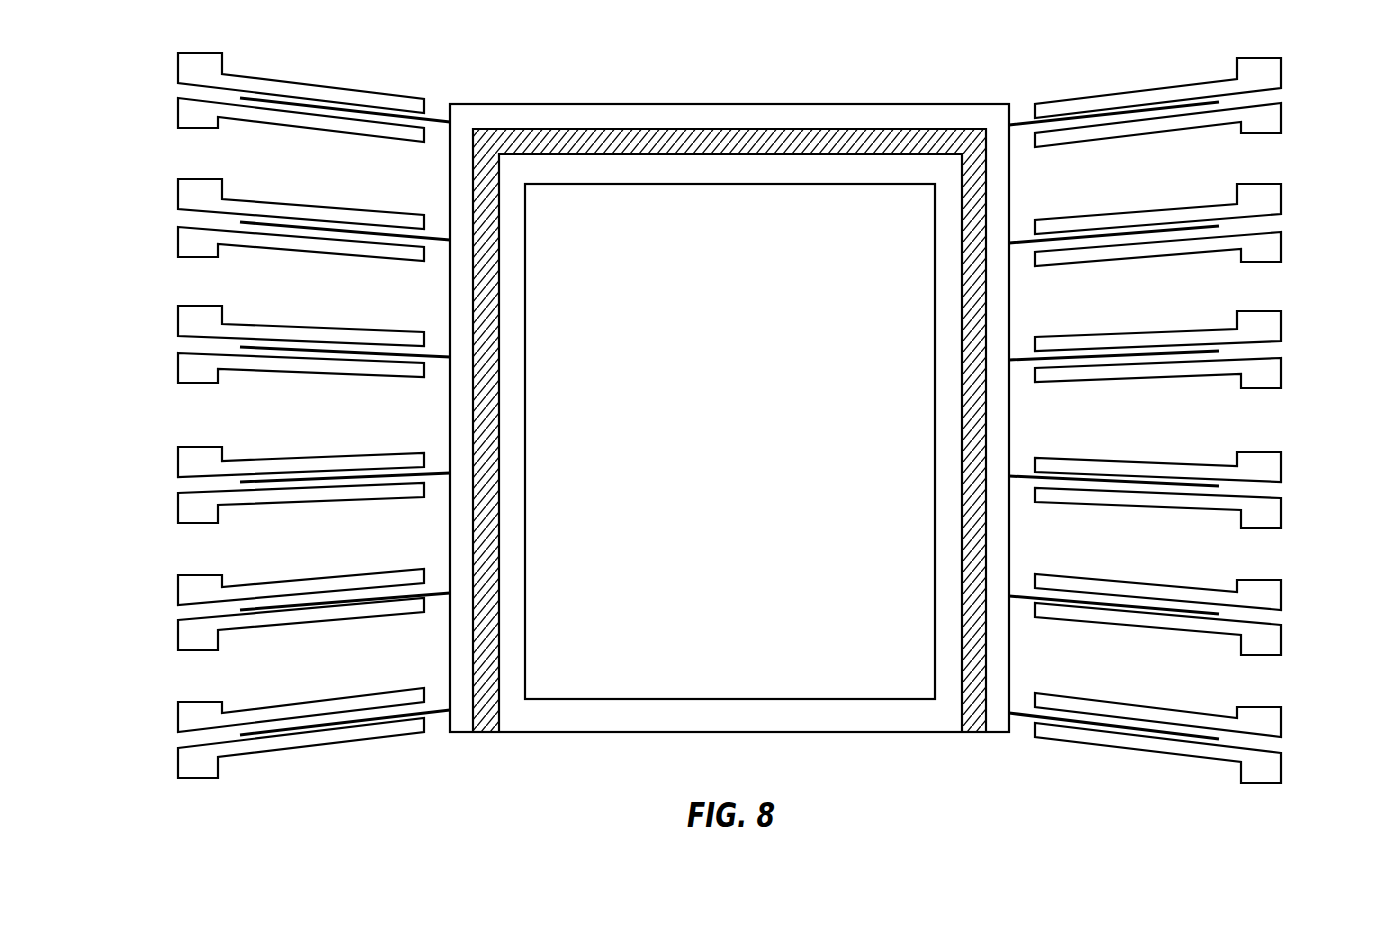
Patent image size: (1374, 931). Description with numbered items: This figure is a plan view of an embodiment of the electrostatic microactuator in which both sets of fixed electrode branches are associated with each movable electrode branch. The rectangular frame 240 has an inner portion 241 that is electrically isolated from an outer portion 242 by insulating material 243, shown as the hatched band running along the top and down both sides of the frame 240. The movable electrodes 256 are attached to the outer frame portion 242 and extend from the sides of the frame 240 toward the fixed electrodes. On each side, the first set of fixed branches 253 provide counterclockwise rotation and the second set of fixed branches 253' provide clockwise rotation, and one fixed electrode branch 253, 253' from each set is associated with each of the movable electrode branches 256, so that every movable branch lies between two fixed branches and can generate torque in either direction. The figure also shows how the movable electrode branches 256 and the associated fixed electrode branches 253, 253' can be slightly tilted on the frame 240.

The frame 240 is at (637, 731).
The inner portion 241 is at (628, 167).
The outer portion 242 is at (887, 117).
The insulating material 243 is at (763, 142).
The first set of fixed branches 253 is at (729, 421).
The second set of fixed branches 253' is at (734, 422).
The movable electrode branches 256 is at (437, 122).